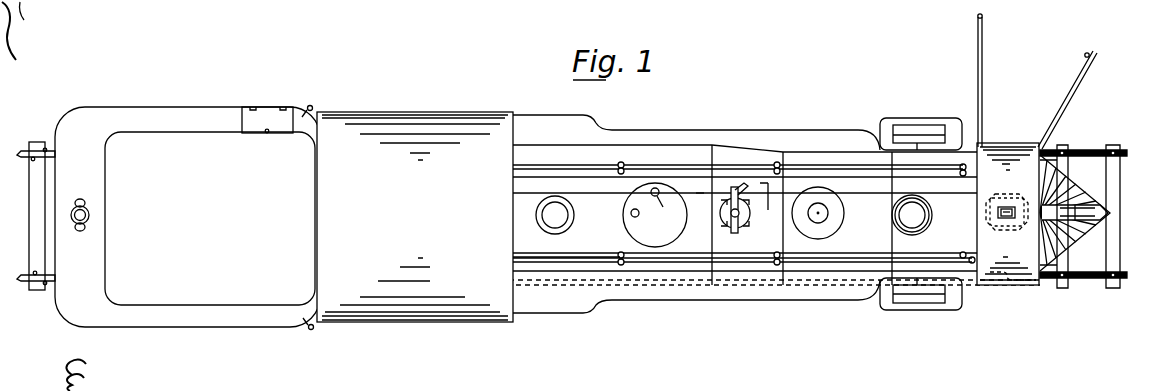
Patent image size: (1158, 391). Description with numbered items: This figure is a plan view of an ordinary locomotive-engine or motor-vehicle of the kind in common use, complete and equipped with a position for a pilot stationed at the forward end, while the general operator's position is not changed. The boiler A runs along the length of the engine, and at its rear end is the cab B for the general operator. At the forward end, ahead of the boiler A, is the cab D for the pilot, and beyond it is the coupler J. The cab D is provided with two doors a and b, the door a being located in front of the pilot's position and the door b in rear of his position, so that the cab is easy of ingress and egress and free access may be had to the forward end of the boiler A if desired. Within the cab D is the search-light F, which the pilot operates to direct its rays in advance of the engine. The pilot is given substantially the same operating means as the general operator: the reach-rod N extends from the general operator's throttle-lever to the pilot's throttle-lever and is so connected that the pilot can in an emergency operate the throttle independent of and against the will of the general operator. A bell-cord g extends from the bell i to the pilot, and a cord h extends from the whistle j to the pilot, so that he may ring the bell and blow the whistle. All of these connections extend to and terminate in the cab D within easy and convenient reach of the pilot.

The door a is at (982, 62).
The door b is at (1068, 97).
The boiler A is at (922, 215).
The cab for the general operator B is at (415, 217).
The cab for the pilot D is at (1008, 214).
The search-light F is at (1020, 226).
The coupler J is at (1065, 208).
The reach-rod N is at (567, 253).
The bell-cord g is at (765, 205).
The cord h is at (700, 193).
The bell i is at (735, 208).
The whistle j is at (655, 215).